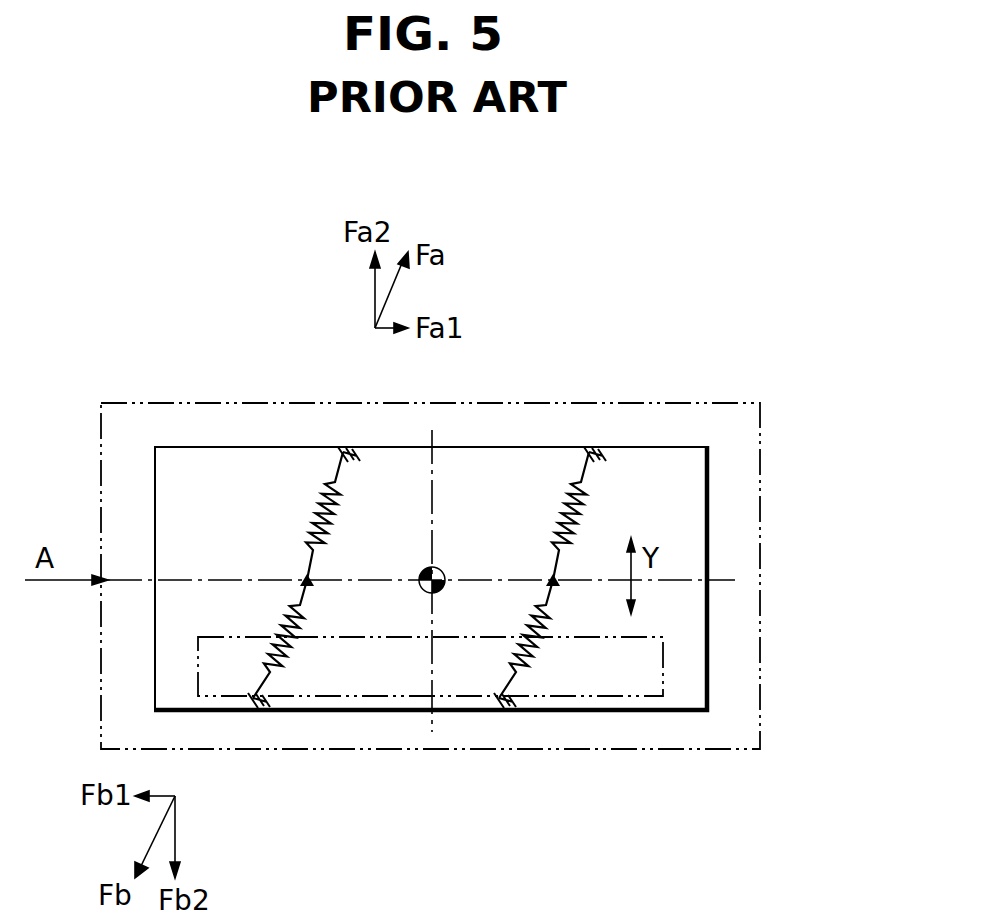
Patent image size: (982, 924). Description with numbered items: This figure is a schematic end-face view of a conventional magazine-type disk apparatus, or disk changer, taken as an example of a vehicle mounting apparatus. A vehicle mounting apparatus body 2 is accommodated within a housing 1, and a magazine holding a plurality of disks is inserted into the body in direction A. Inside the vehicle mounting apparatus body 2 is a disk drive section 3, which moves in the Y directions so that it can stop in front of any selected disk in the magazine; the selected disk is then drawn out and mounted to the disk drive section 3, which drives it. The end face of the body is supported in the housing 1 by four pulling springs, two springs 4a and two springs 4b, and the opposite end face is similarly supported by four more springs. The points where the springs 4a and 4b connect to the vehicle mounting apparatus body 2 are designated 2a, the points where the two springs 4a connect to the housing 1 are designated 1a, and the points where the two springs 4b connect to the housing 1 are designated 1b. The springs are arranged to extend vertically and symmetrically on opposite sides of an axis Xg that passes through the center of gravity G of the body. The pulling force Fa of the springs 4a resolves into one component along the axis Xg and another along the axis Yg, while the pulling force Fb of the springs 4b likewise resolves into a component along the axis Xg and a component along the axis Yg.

The housing 1 is at (760, 430).
The vehicle mounting apparatus body 2 is at (707, 490).
The disk drive section 3 is at (663, 663).
The points connecting the two springs 4a to the housing 1a is at (343, 452).
The points connecting the two springs 4b to the housing 1b is at (253, 698).
The points connecting the springs to the vehicle mounting apparatus body 2a is at (310, 584).
The springs 4a is at (322, 498).
The springs 4b is at (285, 650).
The center of gravity G is at (442, 570).
The axis Xg is at (735, 580).
The axis Yg is at (432, 732).